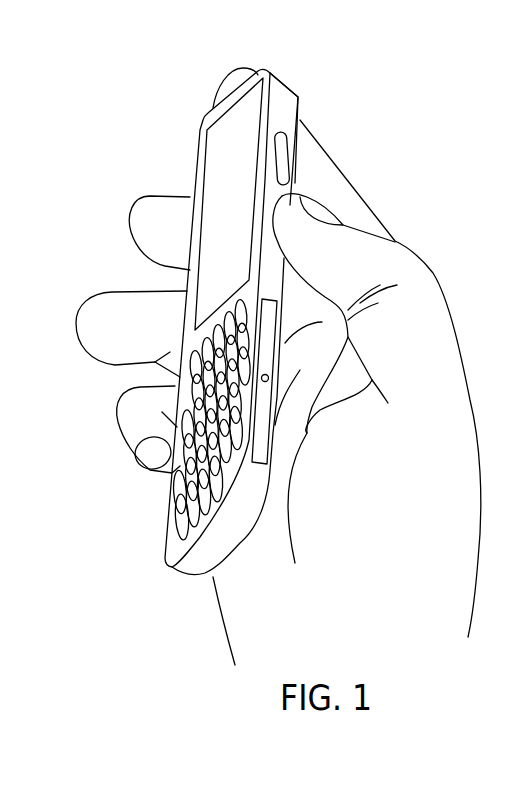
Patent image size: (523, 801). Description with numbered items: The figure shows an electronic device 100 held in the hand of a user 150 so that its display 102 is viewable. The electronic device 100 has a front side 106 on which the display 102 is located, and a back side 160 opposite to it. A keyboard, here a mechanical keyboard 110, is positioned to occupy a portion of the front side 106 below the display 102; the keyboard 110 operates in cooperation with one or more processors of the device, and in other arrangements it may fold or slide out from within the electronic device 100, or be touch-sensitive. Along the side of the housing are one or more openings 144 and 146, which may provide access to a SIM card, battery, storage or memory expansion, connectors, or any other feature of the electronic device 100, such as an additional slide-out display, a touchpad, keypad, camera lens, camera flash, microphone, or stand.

The electronic device 100 is at (216, 295).
The display 102 is at (213, 157).
The front side 106 is at (168, 553).
The mechanical keyboard 110 is at (192, 512).
The opening 144 is at (286, 152).
The opening 146 is at (263, 459).
The user 150 is at (426, 472).
The back side 160 is at (300, 98).